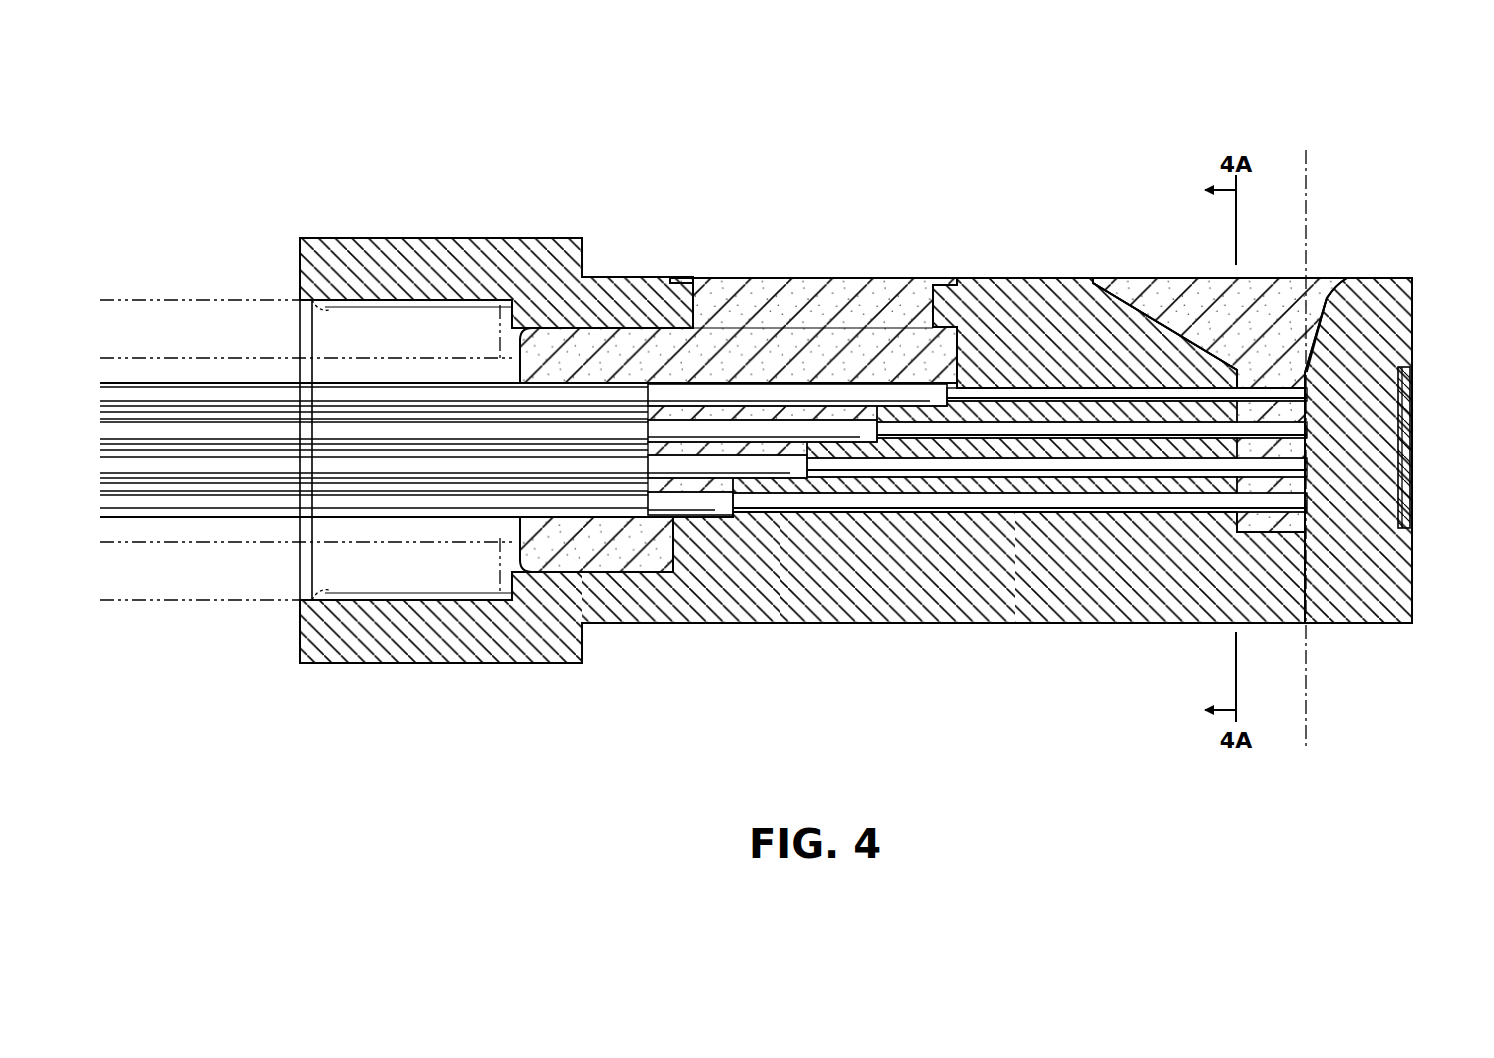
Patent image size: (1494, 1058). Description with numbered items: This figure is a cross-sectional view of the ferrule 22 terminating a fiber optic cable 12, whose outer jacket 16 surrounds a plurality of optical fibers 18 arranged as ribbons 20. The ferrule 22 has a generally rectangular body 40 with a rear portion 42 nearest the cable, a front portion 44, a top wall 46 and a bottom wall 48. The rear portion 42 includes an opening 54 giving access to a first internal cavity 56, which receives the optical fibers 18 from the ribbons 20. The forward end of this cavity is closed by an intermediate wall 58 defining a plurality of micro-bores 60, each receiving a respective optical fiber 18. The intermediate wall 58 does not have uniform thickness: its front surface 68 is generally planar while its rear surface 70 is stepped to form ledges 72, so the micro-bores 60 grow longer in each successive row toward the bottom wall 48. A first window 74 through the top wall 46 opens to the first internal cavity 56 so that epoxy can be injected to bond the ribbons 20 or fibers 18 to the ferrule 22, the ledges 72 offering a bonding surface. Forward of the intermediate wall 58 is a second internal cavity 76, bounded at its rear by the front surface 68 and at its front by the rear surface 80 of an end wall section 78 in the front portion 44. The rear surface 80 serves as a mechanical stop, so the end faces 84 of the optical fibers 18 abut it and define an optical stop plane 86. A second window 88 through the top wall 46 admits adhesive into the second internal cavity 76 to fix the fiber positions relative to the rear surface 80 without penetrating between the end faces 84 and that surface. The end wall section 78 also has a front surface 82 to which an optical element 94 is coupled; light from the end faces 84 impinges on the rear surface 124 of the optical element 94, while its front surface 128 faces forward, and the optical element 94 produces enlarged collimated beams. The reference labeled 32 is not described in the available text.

The fiber optic cable 12 is at (374, 416).
The outer jacket 16 is at (150, 358).
The optical fibers 18 is at (1050, 393).
The ribbons 20 is at (257, 423).
The ferrule 22 is at (392, 76).
The end face 32 is at (1412, 592).
The body 40 is at (802, 427).
The rear portion 42 is at (387, 234).
The front portion 44 is at (1384, 274).
The top wall 46 is at (622, 277).
The bottom wall 48 is at (625, 624).
The opening 54 is at (312, 300).
The first internal cavity 56 is at (418, 450).
The intermediate wall 58 is at (962, 279).
The micro-bores 60 is at (1095, 430).
The front surface 68 is at (1240, 386).
The rear surface 70 is at (955, 358).
The ledges 72 is at (877, 418).
The first window 74 is at (780, 278).
The second internal cavity 76 is at (1327, 298).
The end wall section 78 is at (1386, 617).
The rear surface 80 is at (1300, 487).
The front surface 82 is at (1400, 397).
The end faces 84 is at (1307, 466).
The optical stop plane 86 is at (1306, 178).
The second window 88 is at (1157, 278).
The optical element 94 is at (1410, 428).
The rear surface 124 is at (1396, 512).
The front surface 128 is at (1407, 497).